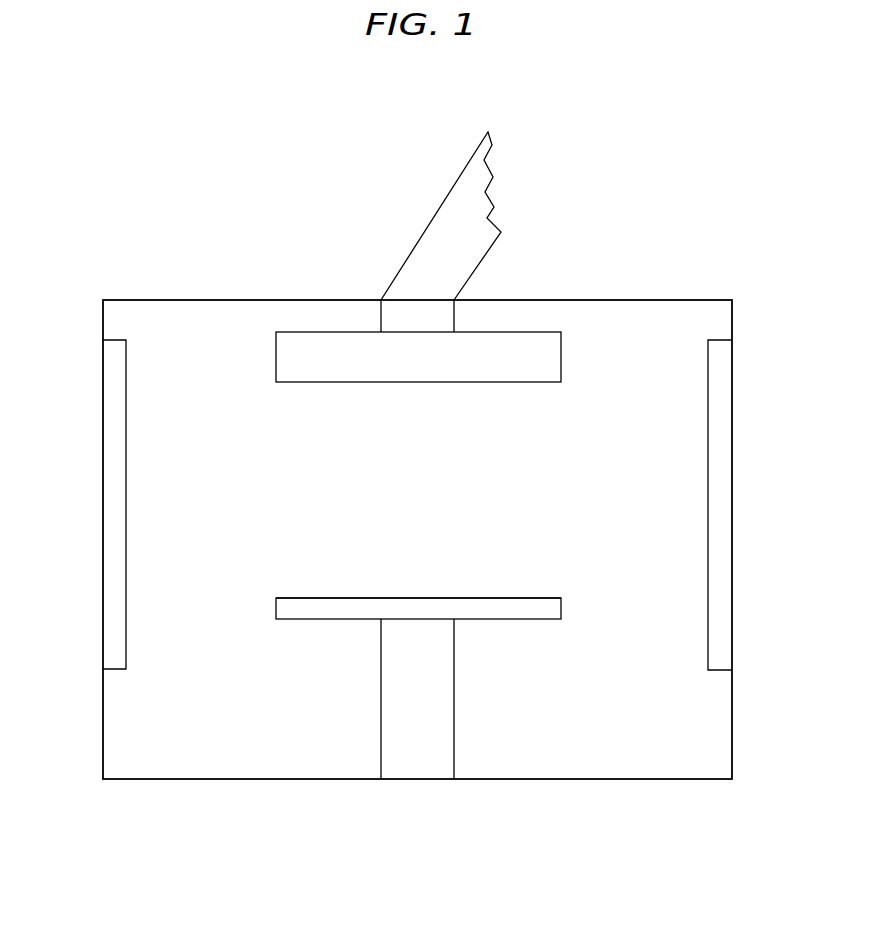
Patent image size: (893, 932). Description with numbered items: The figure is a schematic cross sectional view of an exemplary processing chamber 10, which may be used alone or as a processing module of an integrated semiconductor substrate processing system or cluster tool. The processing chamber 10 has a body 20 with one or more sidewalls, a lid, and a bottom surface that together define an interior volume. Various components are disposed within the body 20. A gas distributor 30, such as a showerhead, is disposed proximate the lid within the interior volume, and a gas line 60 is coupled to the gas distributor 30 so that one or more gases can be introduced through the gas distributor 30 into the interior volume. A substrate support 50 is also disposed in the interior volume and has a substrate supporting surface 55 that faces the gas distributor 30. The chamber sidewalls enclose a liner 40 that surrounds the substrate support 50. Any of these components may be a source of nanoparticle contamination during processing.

The processing chamber 10 is at (704, 164).
The body 20 is at (521, 300).
The gas distributor 30 is at (315, 345).
The liner 40 is at (113, 355).
The substrate support 50 is at (330, 607).
The substrate supporting surface 55 is at (401, 592).
The gas line 60 is at (420, 237).